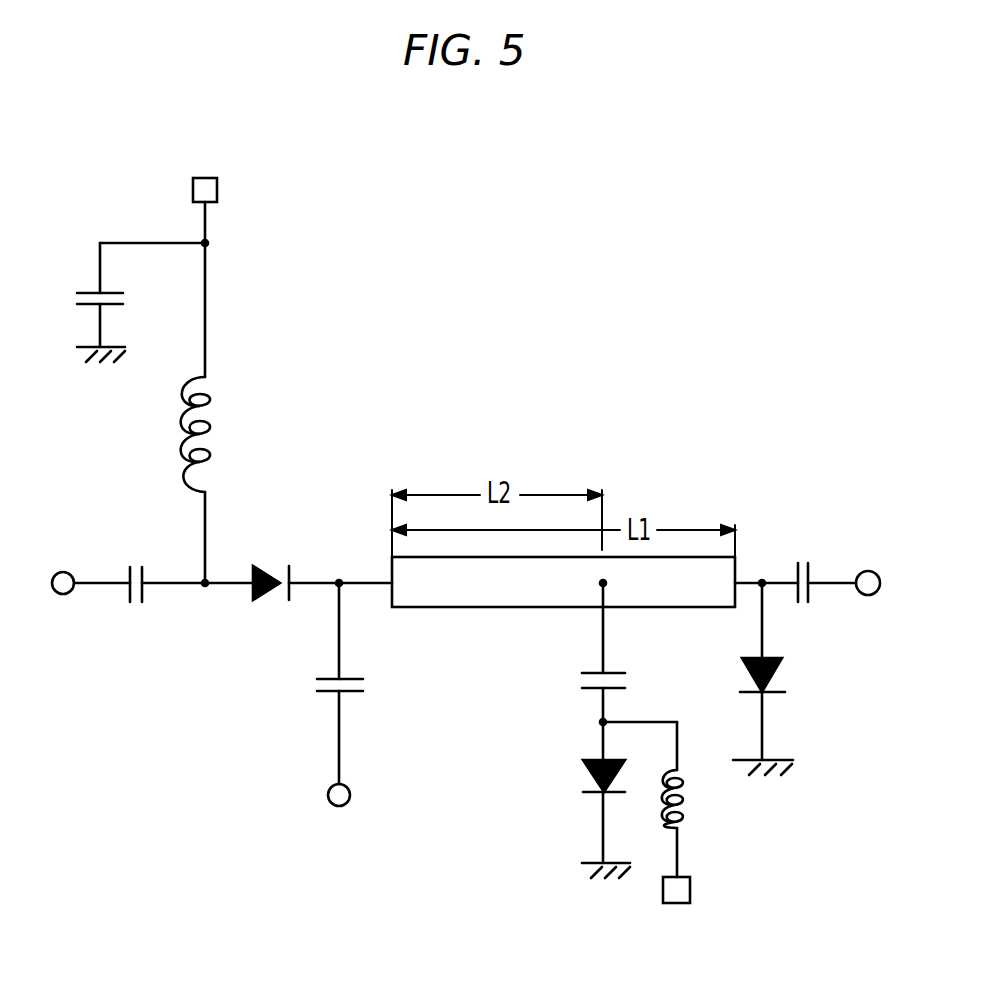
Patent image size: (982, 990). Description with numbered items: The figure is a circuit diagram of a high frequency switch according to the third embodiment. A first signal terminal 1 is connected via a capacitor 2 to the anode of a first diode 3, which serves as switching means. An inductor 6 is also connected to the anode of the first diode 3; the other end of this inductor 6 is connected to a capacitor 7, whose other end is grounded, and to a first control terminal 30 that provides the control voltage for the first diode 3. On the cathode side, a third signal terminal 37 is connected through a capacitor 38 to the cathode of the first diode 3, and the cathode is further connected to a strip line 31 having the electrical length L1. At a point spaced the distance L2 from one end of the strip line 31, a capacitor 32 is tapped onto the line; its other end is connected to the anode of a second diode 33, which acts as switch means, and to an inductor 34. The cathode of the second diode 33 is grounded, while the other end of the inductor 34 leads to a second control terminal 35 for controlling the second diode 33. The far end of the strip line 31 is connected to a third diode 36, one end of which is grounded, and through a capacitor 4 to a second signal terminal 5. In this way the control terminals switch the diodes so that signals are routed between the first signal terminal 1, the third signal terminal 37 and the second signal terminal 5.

The first signal terminal 1 is at (63, 594).
The capacitor 2 is at (135, 604).
The first diode 3 is at (270, 567).
The capacitor 4 is at (803, 560).
The second signal terminal 5 is at (868, 570).
The inductor 6 is at (222, 437).
The capacitor 7 is at (123, 297).
The first control terminal 30 is at (217, 190).
The strip line 31 is at (500, 607).
The capacitor 32 is at (580, 678).
The second diode 33 is at (583, 772).
The inductor 34 is at (690, 806).
The second control terminal 35 is at (690, 890).
The third diode 36 is at (778, 666).
The third signal terminal 37 is at (330, 801).
The capacitor 38 is at (317, 683).